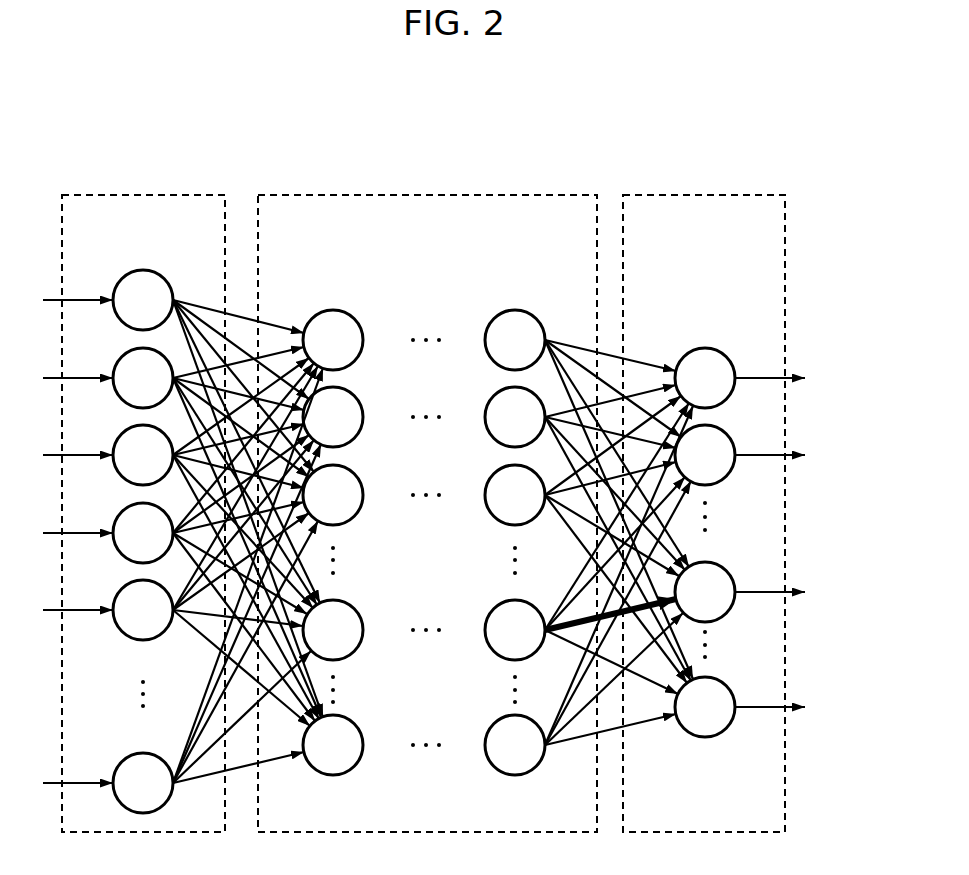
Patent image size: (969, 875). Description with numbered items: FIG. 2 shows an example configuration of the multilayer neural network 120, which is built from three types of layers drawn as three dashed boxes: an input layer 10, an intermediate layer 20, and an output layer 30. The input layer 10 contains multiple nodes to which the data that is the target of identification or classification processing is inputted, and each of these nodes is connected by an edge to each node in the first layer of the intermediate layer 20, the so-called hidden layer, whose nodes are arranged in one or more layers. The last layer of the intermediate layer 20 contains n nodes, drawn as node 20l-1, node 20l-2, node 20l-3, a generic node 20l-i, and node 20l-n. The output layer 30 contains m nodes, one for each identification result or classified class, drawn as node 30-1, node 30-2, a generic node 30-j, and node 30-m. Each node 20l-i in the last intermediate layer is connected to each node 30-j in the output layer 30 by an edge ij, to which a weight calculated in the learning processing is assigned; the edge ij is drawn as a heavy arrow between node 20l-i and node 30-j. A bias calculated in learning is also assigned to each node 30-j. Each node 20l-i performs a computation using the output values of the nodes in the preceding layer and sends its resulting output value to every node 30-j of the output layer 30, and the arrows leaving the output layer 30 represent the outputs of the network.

The multilayer neural network 120 is at (558, 117).
The input layer 10 is at (187, 195).
The intermediate layer 20 is at (513, 195).
The output layer 30 is at (735, 195).
The node in last layer of intermediate layer 20l-1 is at (493, 328).
The node in last layer of intermediate layer 20l-2 is at (493, 405).
The node in last layer of intermediate layer 20l-3 is at (493, 481).
The node in last layer of intermediate layer 20l-i is at (493, 616).
The node in last layer of intermediate layer 20l-n is at (493, 731).
The output layer node 30-1 is at (734, 362).
The output layer node 30-2 is at (734, 439).
The output layer node 30-j is at (734, 576).
The output layer node 30-m is at (734, 691).
The edge ij is at (572, 638).